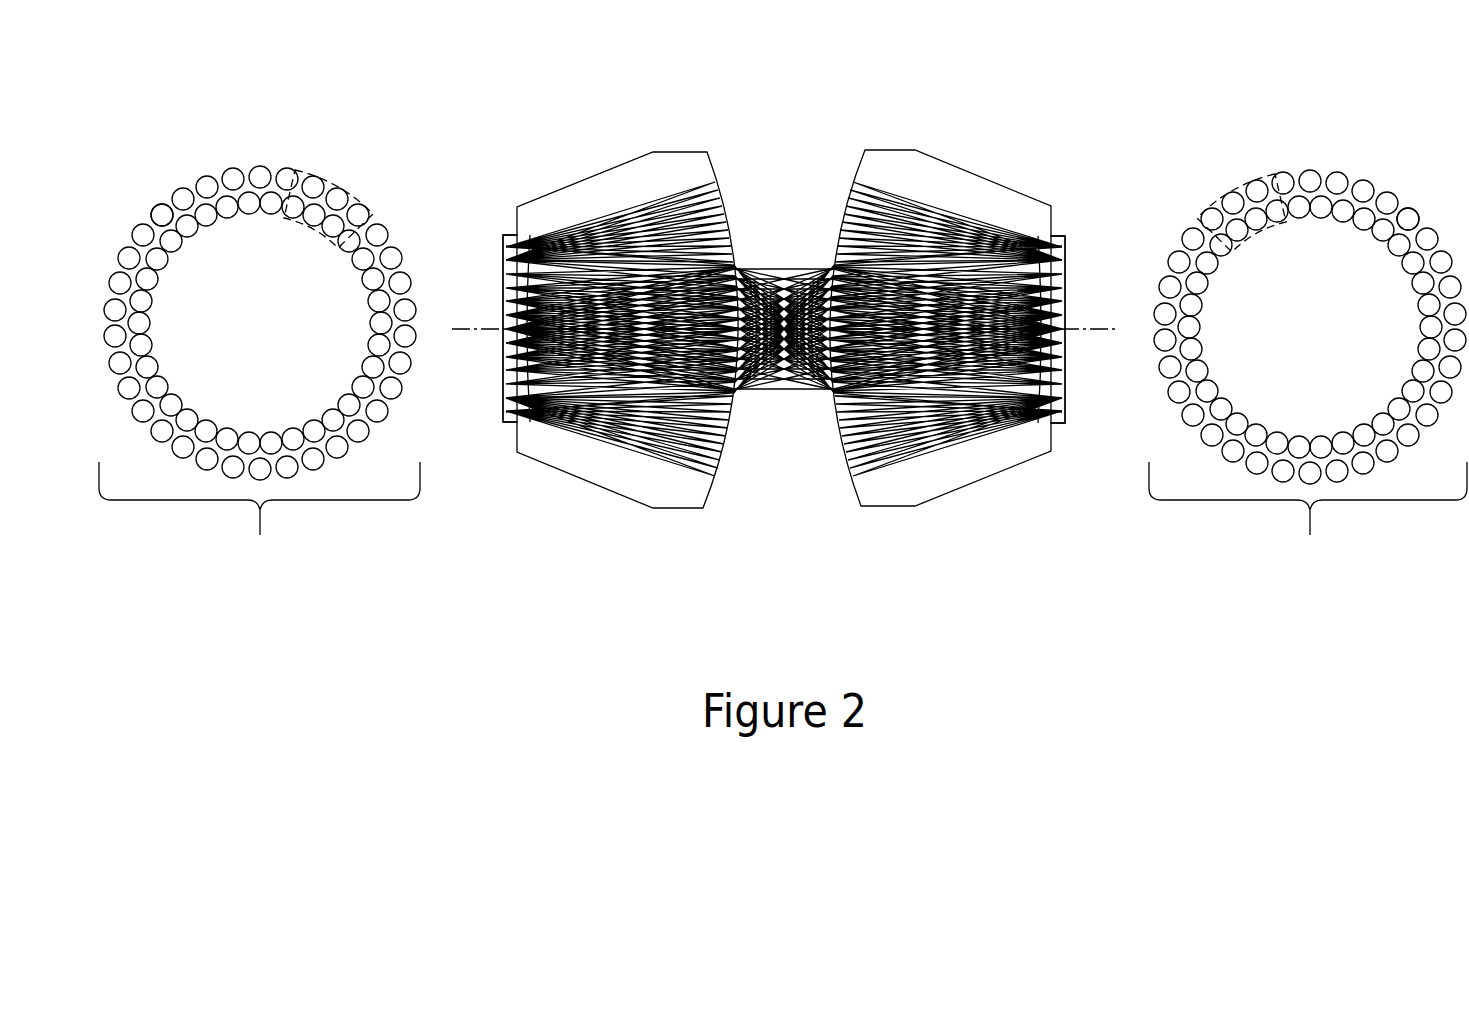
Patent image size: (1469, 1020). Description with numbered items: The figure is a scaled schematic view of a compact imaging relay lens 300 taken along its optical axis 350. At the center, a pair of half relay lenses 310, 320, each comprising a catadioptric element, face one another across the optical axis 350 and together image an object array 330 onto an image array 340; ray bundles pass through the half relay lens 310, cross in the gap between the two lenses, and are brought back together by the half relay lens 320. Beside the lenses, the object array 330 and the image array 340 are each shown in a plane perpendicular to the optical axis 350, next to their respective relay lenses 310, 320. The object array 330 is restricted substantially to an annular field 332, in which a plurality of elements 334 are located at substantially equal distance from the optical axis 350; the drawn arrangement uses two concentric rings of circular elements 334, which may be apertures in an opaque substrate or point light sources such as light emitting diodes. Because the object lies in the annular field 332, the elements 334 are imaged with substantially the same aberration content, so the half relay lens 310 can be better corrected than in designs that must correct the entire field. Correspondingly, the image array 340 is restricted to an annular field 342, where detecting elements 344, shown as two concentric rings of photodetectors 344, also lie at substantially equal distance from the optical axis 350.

The compact imaging relay lens 300 is at (490, 83).
The half relay lens 310 is at (582, 481).
The half relay lens 320 is at (983, 483).
The object array 330 is at (502, 280).
The annular field 332 is at (300, 258).
The elements 334 is at (150, 212).
The image array 340 is at (1067, 280).
The annular field 342 is at (1272, 262).
The detecting elements 344 is at (1419, 214).
The optical axis 350 is at (457, 333).